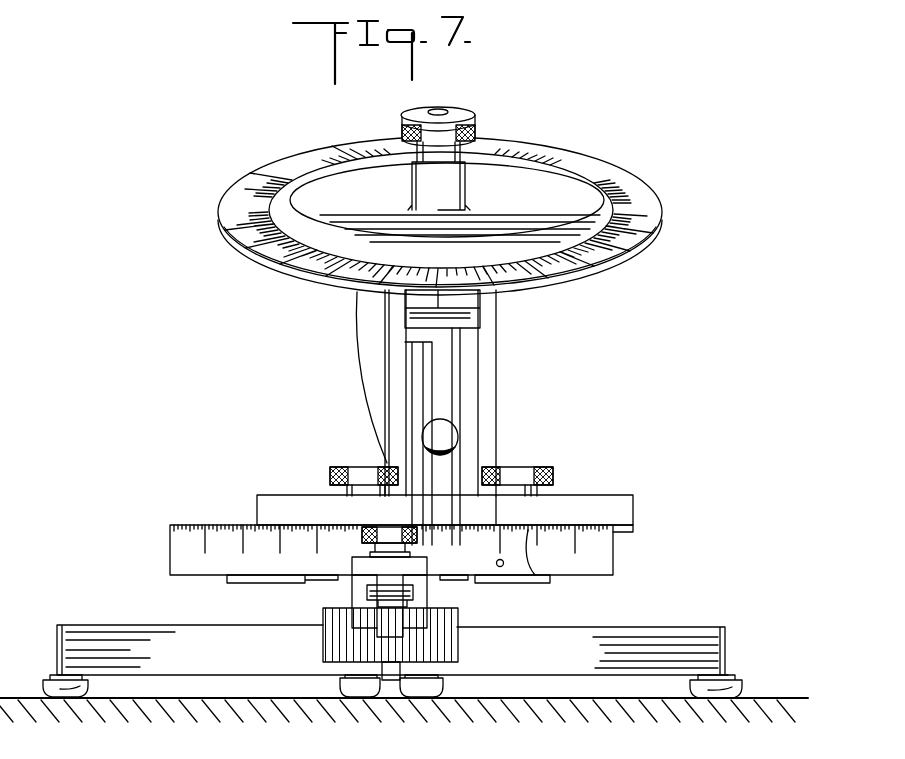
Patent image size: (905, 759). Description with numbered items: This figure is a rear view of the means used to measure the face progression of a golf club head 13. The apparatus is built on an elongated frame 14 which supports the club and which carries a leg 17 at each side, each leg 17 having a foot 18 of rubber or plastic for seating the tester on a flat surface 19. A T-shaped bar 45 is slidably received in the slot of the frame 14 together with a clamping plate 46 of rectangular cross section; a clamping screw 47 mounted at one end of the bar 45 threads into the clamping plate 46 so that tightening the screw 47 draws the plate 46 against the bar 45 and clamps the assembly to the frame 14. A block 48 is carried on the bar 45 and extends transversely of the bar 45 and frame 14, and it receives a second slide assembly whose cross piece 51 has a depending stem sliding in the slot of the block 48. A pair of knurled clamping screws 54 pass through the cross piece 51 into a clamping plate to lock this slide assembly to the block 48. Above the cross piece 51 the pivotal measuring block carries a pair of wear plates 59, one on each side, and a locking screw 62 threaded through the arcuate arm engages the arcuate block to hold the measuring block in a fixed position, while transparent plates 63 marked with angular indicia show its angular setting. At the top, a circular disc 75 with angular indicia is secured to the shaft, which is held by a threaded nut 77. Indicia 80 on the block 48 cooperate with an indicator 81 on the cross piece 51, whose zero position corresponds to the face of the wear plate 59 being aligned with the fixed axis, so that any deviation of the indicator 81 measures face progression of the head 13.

The golf club head 13 is at (357, 315).
The elongated frame 14 is at (430, 636).
The leg 17 is at (85, 640).
The foot 18 is at (43, 682).
The flat surface 19 is at (785, 700).
The T-shaped bar 45 is at (358, 562).
The clamping plate 46 is at (373, 592).
The clamping screw 47 is at (387, 531).
The block 48 is at (607, 548).
The cross piece 51 is at (625, 500).
The clamping screw 54 is at (355, 465).
The wear plate 59 is at (393, 383).
The locking screw 62 is at (450, 437).
The transparent plate 63 is at (433, 378).
The circular disc 75 is at (620, 252).
The threaded nut 77 is at (462, 111).
The indicia 80 is at (535, 575).
The indicator 81 is at (497, 510).